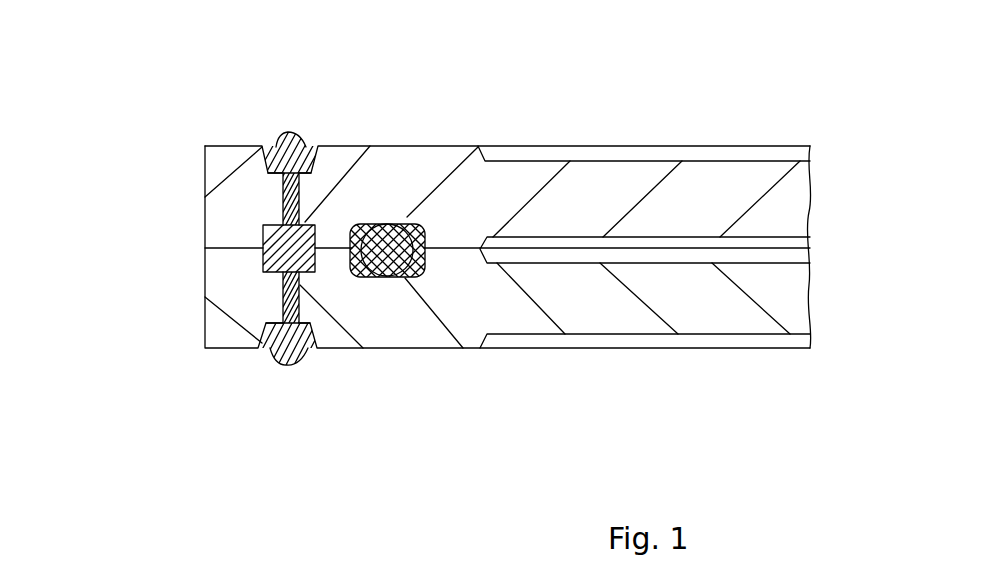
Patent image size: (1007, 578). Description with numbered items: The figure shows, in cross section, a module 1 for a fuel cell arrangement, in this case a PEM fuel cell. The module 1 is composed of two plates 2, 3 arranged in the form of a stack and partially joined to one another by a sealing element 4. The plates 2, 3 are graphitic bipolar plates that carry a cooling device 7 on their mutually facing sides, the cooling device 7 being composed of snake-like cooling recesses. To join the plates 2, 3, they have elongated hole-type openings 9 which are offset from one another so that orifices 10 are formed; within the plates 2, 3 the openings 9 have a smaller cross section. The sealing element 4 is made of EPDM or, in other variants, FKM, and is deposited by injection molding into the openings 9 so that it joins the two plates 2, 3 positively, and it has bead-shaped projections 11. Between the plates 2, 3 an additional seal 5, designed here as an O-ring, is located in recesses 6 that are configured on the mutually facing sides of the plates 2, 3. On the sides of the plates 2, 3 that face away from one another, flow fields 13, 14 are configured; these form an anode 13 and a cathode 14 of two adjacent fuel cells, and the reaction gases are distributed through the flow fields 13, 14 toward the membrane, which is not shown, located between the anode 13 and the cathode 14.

The module 1 is at (153, 363).
The plate 2 is at (410, 166).
The plate 3 is at (428, 332).
The sealing element 4 is at (280, 360).
The additional seal 5 is at (388, 277).
The recesses 6 is at (403, 235).
The cooling device 7 is at (733, 253).
The openings 9 is at (301, 212).
The orifices 10 is at (275, 150).
The bead-shaped projections 11 is at (290, 146).
The anode 13 is at (630, 152).
The cathode 14 is at (655, 343).